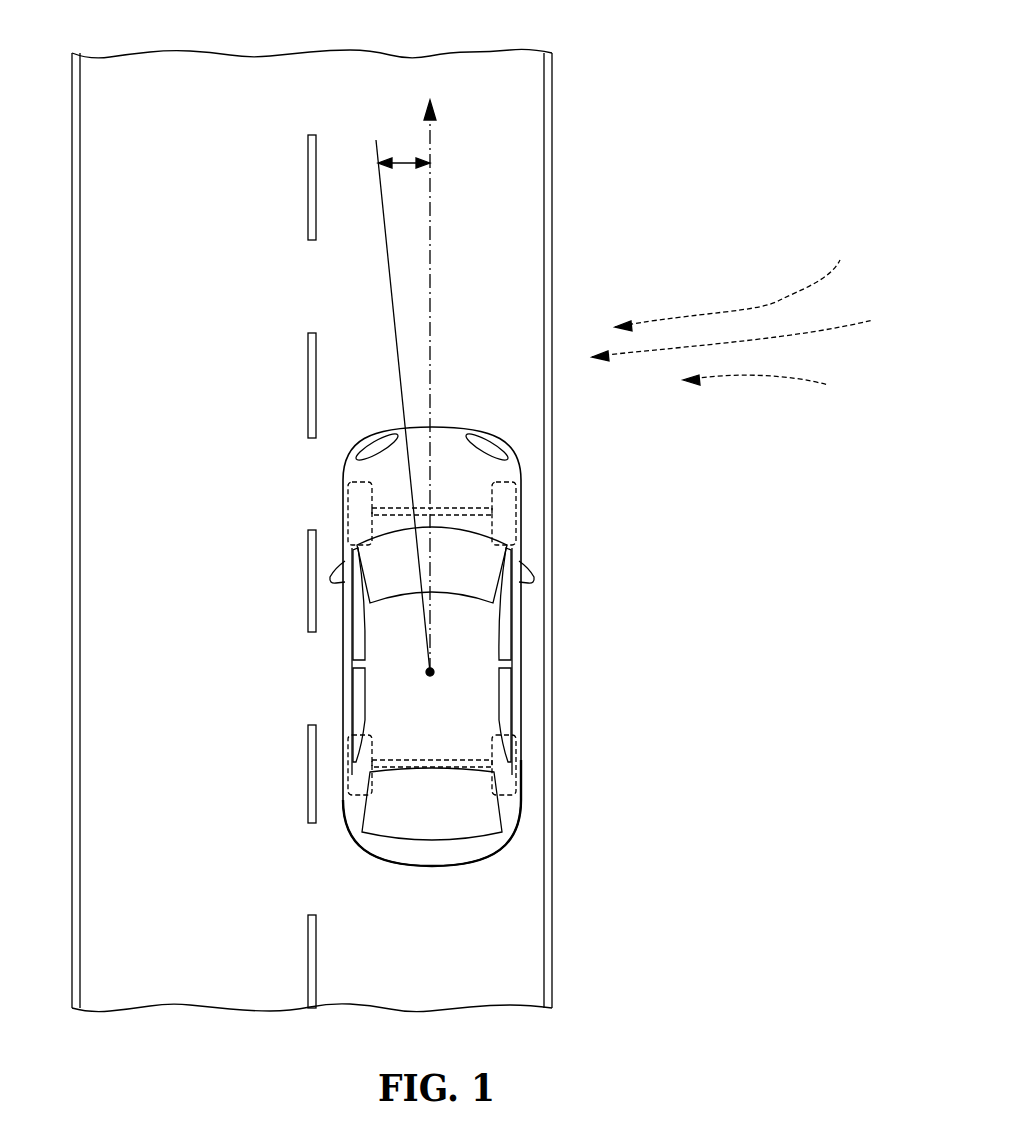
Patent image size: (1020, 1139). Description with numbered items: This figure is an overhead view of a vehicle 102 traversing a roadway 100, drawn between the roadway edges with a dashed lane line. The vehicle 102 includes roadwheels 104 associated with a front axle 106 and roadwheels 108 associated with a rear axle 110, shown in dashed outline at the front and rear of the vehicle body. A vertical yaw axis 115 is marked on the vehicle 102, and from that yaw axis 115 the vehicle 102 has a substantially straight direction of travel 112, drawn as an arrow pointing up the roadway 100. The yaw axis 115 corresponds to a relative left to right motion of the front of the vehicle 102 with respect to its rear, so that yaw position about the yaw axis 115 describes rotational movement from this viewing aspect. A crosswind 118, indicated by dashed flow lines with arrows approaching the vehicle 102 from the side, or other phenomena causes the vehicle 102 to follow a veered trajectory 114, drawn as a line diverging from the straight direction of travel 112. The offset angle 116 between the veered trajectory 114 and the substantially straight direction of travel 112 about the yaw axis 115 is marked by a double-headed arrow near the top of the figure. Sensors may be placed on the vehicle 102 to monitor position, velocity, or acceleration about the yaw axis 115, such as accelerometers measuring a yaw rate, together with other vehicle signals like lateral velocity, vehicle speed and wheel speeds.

The roadway 100 is at (606, 51).
The vehicle 102 is at (491, 873).
The roadwheels 104 is at (346, 508).
The front axle 106 is at (443, 508).
The roadwheels 108 is at (346, 771).
The rear axle 110 is at (452, 767).
The substantially straight direction of travel 112 is at (430, 295).
The veered trajectory 114 is at (391, 283).
The yaw axis 115 is at (430, 676).
The offset angle 116 is at (404, 158).
The crosswind 118 is at (790, 300).